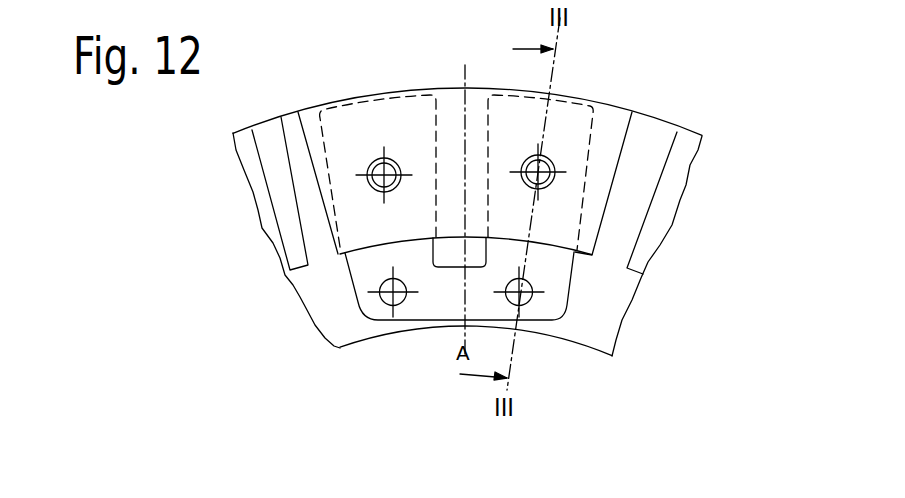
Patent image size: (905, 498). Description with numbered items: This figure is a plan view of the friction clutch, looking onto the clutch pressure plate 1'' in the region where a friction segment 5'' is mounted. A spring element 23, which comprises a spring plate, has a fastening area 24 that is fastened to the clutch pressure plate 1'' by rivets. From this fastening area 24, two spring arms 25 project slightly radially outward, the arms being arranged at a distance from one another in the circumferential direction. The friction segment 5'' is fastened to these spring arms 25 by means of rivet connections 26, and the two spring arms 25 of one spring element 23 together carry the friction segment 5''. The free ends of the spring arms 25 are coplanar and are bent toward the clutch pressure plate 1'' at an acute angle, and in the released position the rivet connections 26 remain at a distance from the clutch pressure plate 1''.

The clutch pressure plate 1'' is at (500, 222).
The friction segment 5'' is at (449, 176).
The spring element 23 is at (335, 277).
The fastening area 24 is at (435, 305).
The spring arms 25 is at (397, 252).
The rivet connections 26 is at (525, 160).